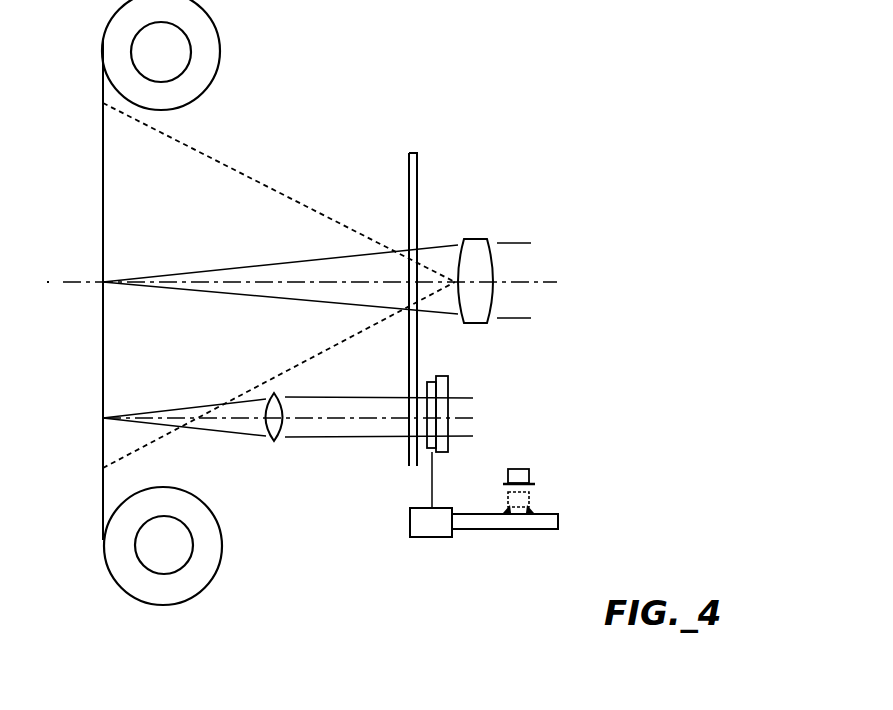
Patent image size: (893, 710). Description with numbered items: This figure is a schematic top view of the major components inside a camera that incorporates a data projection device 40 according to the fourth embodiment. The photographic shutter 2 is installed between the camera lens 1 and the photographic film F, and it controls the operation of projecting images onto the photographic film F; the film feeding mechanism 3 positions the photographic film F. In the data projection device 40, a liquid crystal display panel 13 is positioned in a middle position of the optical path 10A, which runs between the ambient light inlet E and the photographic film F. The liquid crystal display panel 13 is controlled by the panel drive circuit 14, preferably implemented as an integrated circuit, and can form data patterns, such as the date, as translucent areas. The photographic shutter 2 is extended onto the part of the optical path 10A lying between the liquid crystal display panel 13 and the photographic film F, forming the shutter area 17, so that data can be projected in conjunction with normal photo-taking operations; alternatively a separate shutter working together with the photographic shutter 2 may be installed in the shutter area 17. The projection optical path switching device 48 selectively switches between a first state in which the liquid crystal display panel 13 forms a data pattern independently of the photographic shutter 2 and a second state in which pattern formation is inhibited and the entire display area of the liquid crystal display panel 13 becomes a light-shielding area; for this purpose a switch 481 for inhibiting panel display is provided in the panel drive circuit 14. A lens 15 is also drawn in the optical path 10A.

The camera lens 1 is at (478, 238).
The photographic shutter 2 is at (417, 153).
The film feeding mechanism 3 is at (216, 38).
The photographic film F is at (104, 178).
The optical path 10A is at (546, 343).
The liquid crystal display panel 13 is at (441, 376).
The panel drive circuit 14 is at (441, 533).
The condenser lens 15 is at (275, 441).
The shutter area 17 is at (390, 453).
The data projection device 40 is at (693, 422).
The projection optical path switching device 48 is at (525, 438).
The switch 481 is at (518, 468).
The ambient light inlet E is at (582, 407).